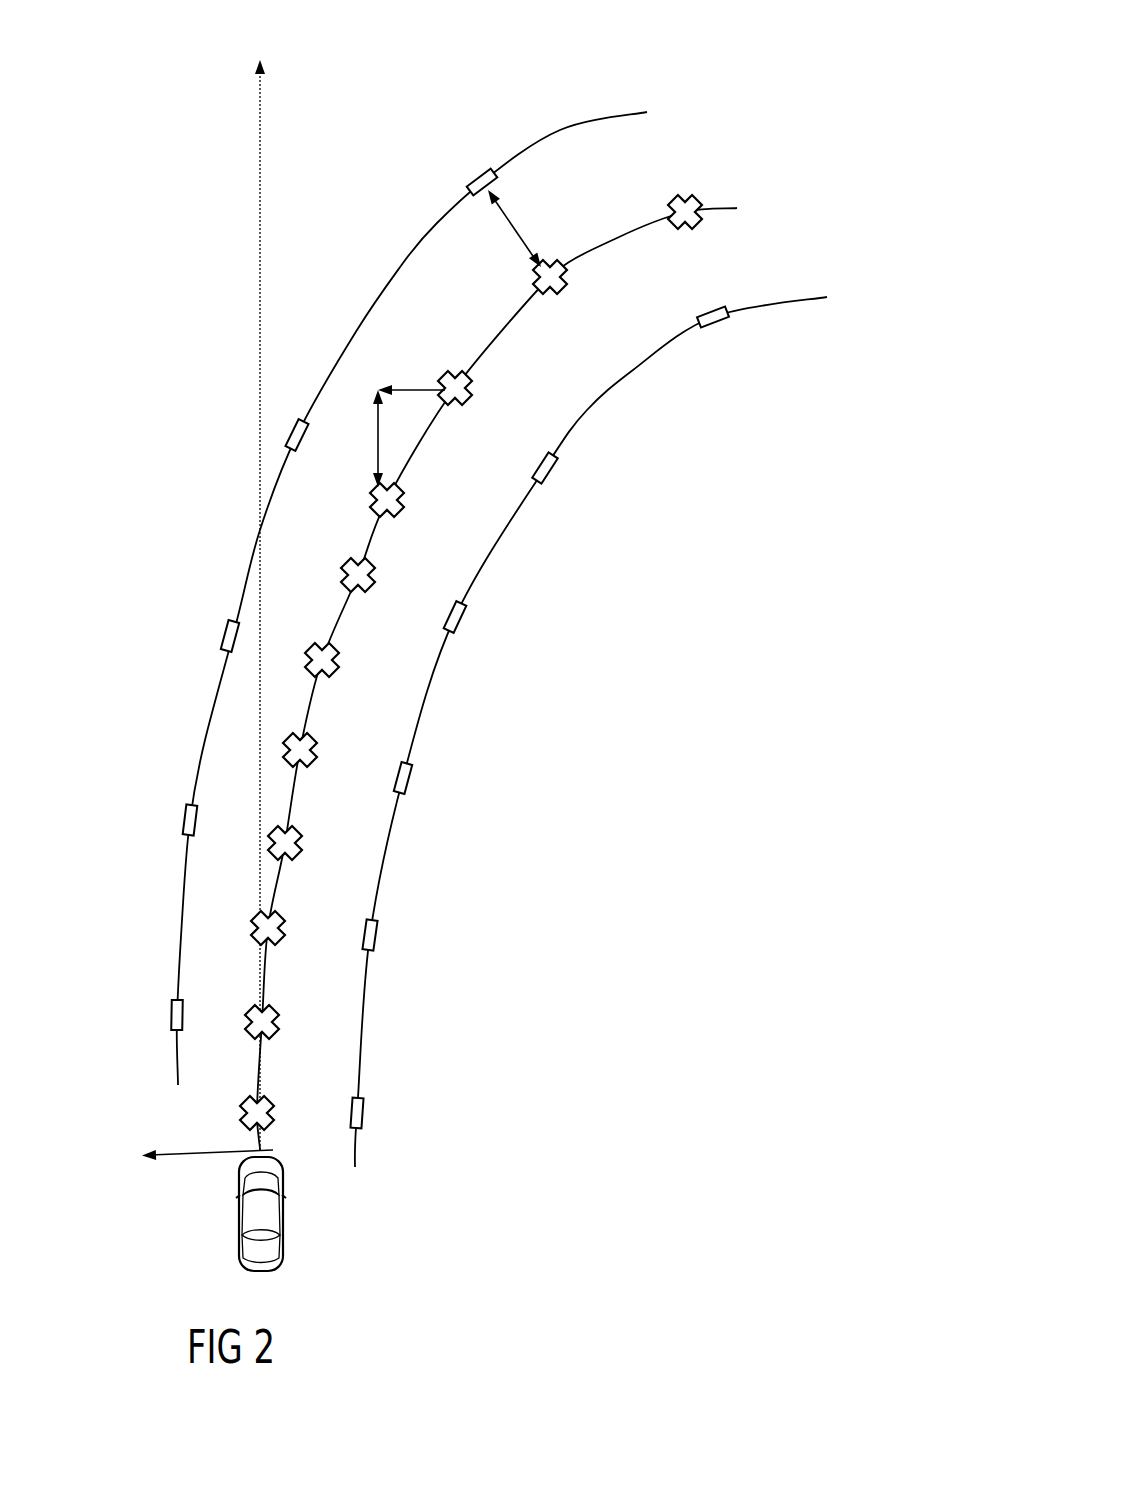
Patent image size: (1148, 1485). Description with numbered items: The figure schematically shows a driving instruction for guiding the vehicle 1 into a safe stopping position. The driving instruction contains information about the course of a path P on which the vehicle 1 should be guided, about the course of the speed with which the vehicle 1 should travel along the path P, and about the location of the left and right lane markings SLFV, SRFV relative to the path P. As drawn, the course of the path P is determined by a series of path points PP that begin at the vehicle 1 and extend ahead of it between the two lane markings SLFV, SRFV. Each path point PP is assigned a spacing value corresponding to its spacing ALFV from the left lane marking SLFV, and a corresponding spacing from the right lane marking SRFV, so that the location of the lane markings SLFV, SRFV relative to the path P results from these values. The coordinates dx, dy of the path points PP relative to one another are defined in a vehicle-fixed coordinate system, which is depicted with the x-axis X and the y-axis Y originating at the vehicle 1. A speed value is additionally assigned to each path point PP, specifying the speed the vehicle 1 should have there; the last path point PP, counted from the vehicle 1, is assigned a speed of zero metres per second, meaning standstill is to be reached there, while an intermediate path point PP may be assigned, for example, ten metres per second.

The vehicle 1 is at (263, 1213).
The path P is at (737, 208).
The path point PP is at (683, 200).
The left lane marking SLFV is at (560, 130).
The right lane marking SRFV is at (827, 297).
The spacing from the left lane marking ALFV is at (525, 240).
The x-coordinate dx is at (366, 438).
The y-coordinate dy is at (411, 372).
The x-axis X is at (276, 594).
The y-axis Y is at (196, 1162).